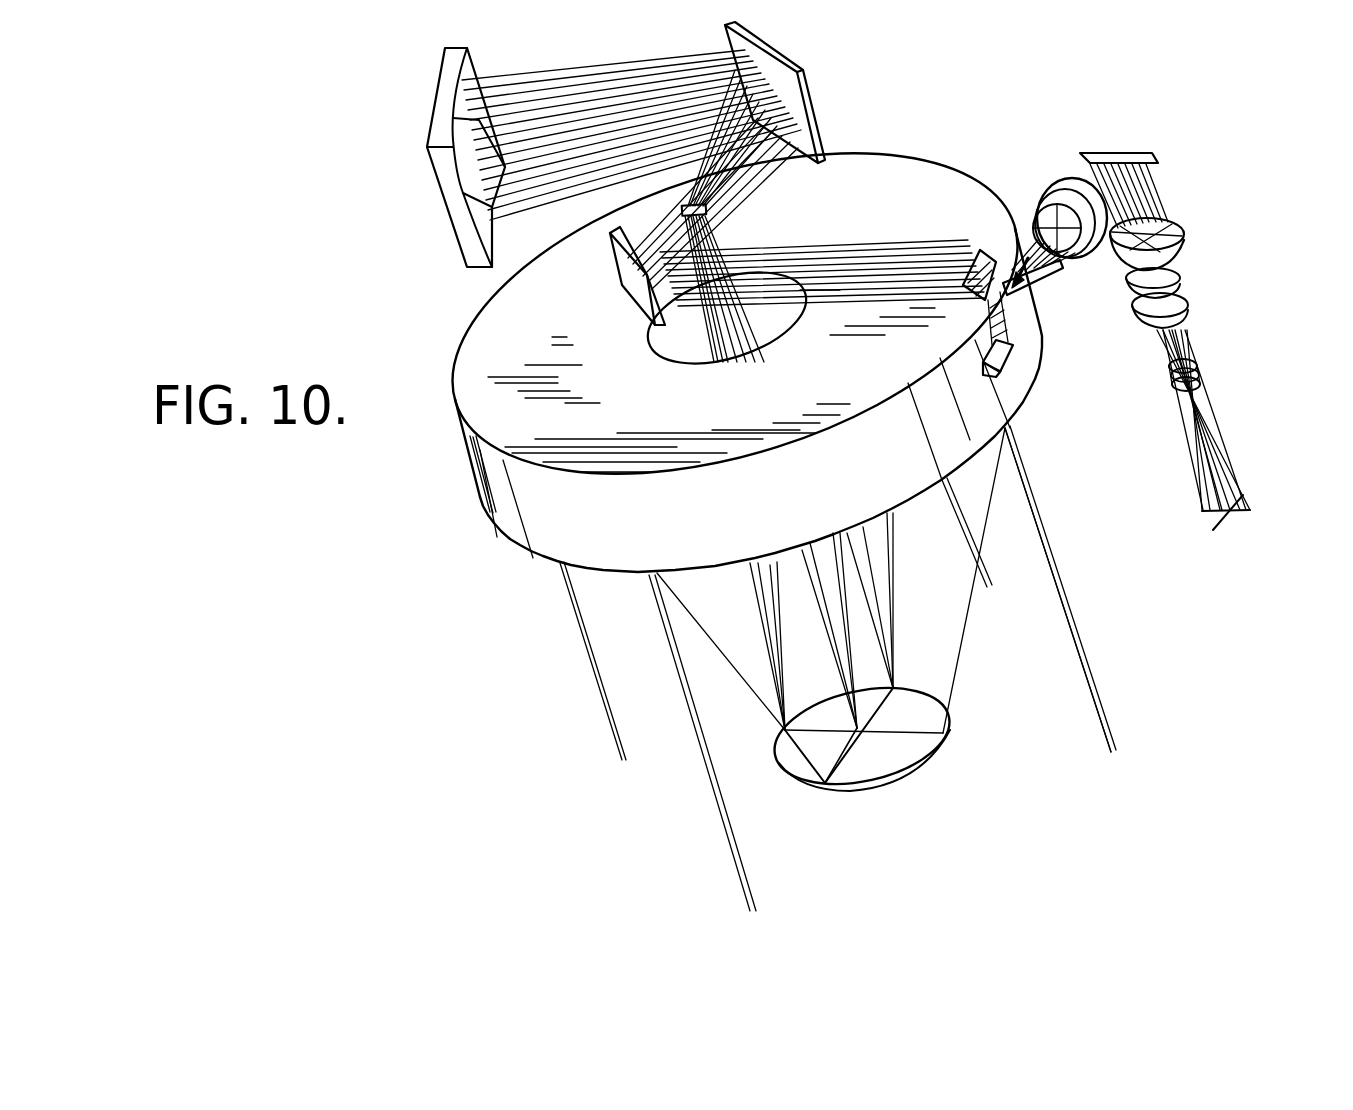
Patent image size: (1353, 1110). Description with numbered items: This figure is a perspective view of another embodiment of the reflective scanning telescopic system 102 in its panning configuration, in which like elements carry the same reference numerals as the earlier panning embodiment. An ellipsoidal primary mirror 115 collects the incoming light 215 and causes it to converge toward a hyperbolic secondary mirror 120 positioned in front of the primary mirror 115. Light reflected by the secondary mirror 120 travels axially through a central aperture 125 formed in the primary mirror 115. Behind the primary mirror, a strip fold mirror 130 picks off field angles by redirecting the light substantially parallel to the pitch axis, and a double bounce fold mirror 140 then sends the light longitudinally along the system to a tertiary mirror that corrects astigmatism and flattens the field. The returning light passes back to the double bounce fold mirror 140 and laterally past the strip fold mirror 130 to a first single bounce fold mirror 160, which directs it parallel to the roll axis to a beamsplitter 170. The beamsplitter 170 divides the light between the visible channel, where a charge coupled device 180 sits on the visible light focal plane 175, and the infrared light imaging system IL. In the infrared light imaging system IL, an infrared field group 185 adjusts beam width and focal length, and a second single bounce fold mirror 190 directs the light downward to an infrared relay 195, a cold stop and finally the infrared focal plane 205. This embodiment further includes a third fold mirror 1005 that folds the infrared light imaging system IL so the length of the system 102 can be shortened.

The system 102 is at (412, 124).
The ellipsoidal primary mirror 115 is at (517, 523).
The hyperbolic secondary mirror 120 is at (932, 756).
The central aperture 125 is at (780, 318).
The strip fold mirror 130 is at (640, 207).
The double bounce fold mirror 140 is at (815, 92).
The first single bounce fold mirror 160 is at (638, 290).
The beamsplitter 170 is at (978, 235).
The visible light focal plane 175 is at (1018, 376).
The charge coupled device 180 is at (992, 367).
The infrared field group 185 is at (1062, 155).
The second single bounce fold mirror 190 is at (1162, 156).
The infrared relay 195 is at (1188, 244).
The infrared focal plane 205 is at (1229, 519).
The incoming light 215 is at (1080, 670).
The third fold mirror 1005 is at (1057, 276).
The infrared light imaging system IL is at (1280, 160).